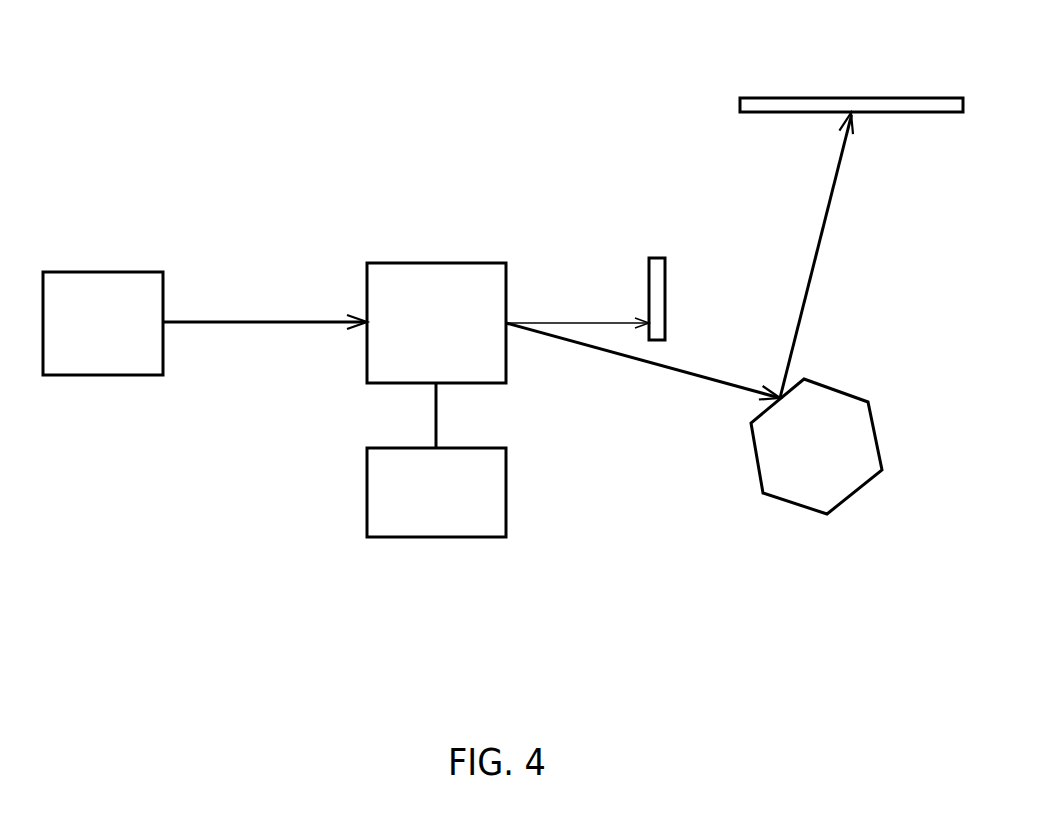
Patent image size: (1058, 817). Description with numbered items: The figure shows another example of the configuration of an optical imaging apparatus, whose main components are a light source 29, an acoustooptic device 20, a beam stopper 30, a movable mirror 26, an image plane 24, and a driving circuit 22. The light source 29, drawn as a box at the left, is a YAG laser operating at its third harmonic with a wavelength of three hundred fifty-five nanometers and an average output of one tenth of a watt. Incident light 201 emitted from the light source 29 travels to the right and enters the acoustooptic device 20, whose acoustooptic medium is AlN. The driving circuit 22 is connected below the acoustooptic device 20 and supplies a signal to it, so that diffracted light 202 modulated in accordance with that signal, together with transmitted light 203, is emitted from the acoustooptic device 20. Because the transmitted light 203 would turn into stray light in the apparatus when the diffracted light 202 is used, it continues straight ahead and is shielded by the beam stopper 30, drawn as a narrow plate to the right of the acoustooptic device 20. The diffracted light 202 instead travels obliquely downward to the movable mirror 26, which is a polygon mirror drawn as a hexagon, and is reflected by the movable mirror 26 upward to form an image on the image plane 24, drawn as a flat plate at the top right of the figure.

The light source 29 is at (131, 272).
The acoustooptic device 20 is at (470, 263).
The driving circuit 22 is at (466, 537).
The incident light 201 is at (248, 324).
The transmitted light 203 is at (588, 321).
The beam stopper 30 is at (657, 258).
The diffracted light 202 is at (645, 364).
The movable mirror 26 is at (797, 507).
The image plane 24 is at (893, 98).